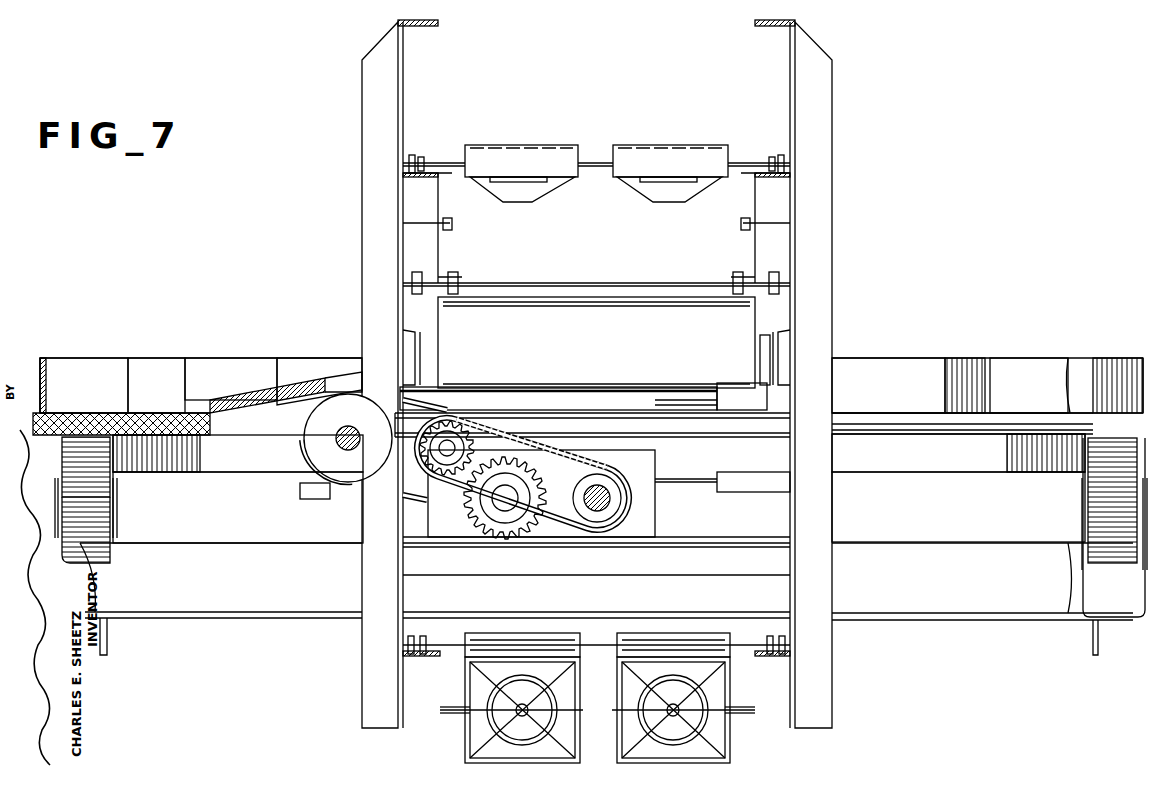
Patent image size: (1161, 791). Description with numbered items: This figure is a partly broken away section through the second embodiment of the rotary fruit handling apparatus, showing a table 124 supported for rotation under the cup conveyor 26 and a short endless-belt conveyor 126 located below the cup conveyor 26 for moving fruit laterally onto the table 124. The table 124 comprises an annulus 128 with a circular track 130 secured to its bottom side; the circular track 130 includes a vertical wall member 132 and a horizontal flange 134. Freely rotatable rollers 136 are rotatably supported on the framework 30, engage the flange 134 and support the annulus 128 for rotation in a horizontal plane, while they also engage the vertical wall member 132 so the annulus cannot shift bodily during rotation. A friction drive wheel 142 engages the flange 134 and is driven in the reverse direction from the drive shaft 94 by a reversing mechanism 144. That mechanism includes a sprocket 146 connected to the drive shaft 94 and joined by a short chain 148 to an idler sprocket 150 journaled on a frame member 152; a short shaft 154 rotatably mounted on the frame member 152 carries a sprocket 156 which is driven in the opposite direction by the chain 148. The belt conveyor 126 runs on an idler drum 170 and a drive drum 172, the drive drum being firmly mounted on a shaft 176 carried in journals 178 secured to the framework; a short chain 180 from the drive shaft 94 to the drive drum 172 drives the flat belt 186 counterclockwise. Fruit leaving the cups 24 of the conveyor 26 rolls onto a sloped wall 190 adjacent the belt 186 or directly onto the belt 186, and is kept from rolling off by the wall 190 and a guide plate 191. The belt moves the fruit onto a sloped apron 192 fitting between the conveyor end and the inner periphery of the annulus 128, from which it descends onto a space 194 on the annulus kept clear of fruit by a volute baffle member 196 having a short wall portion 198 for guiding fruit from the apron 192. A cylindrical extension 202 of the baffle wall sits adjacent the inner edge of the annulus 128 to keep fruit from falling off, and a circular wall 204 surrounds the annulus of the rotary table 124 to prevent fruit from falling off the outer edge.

The cups 24 is at (678, 165).
The cup conveyor 26 is at (582, 130).
The framework 30 is at (838, 262).
The drive shaft 94 is at (587, 507).
The table 124 is at (1000, 355).
The endless-belt conveyor 126 is at (338, 383).
The annulus 128 is at (103, 420).
The circular track 130 is at (237, 460).
The vertical wall member 132 is at (123, 457).
The horizontal flange 134 is at (92, 438).
The rollers 136 is at (90, 517).
The friction drive wheel 142 is at (617, 443).
The reversing mechanism 144 is at (562, 438).
The sprocket 146 is at (573, 475).
The short chain 148 is at (507, 432).
The idler sprocket 150 is at (467, 443).
The frame member 152 is at (457, 532).
The short shaft 154 is at (503, 497).
The sprocket 156 is at (477, 513).
The idler drum 170 is at (713, 408).
The drive drum 172 is at (333, 418).
The shaft 176 is at (362, 450).
The journals 178 is at (727, 407).
The short chain 180 is at (298, 465).
The flat belt 186 is at (607, 395).
The sloped wall 190 is at (562, 362).
The guide plate 191 is at (415, 352).
The sloped apron 192 is at (273, 400).
The space 194 is at (160, 415).
The volute baffle member 196 is at (230, 355).
The short wall portion 198 is at (163, 365).
The extension 202 is at (865, 380).
The circular wall 204 is at (62, 368).